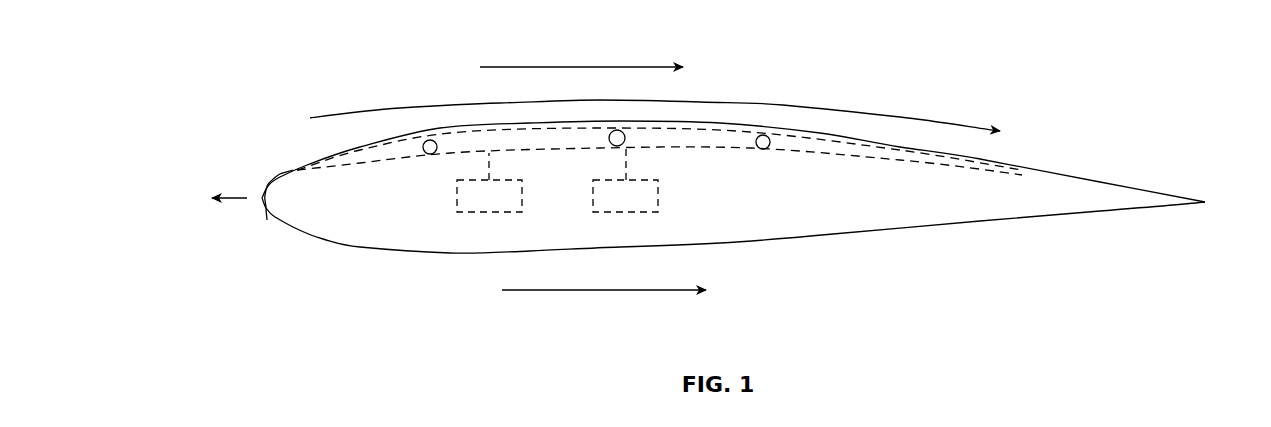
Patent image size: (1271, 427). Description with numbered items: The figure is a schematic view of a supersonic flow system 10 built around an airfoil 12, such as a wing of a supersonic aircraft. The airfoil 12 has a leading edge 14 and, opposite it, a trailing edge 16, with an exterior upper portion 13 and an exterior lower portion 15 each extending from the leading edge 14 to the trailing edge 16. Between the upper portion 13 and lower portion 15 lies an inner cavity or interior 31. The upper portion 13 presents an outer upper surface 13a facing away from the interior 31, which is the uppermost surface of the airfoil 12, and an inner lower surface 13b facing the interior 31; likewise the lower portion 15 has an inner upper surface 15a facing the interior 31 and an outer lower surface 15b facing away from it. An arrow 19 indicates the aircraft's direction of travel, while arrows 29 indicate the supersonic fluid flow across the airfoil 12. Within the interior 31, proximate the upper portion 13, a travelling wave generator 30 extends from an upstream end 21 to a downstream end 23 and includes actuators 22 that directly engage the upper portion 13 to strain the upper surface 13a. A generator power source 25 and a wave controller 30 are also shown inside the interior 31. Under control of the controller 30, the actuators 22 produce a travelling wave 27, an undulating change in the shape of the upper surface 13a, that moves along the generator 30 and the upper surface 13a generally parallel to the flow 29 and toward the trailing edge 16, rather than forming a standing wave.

The supersonic flow system 10 is at (371, 62).
The airfoil 12 is at (322, 252).
The upper portion 13 is at (1108, 180).
The upper surface 13a is at (892, 145).
The lower surface of upper portion 13b is at (820, 140).
The leading edge 14 is at (263, 207).
The lower portion 15 is at (1045, 215).
The upper surface of lower portion 15a is at (870, 228).
The lower surface 15b is at (833, 235).
The trailing edge 16 is at (1205, 202).
The direction of travel 19 is at (237, 197).
The upstream end 21 is at (267, 220).
The actuators 22 is at (427, 155).
The downstream end 23 is at (1022, 172).
The generator power source 25 is at (487, 212).
The travelling wave 27 is at (783, 105).
The supersonic fluid flow 29 is at (577, 65).
The travelling wave generator 30 is at (633, 212).
The interior 31 is at (935, 210).